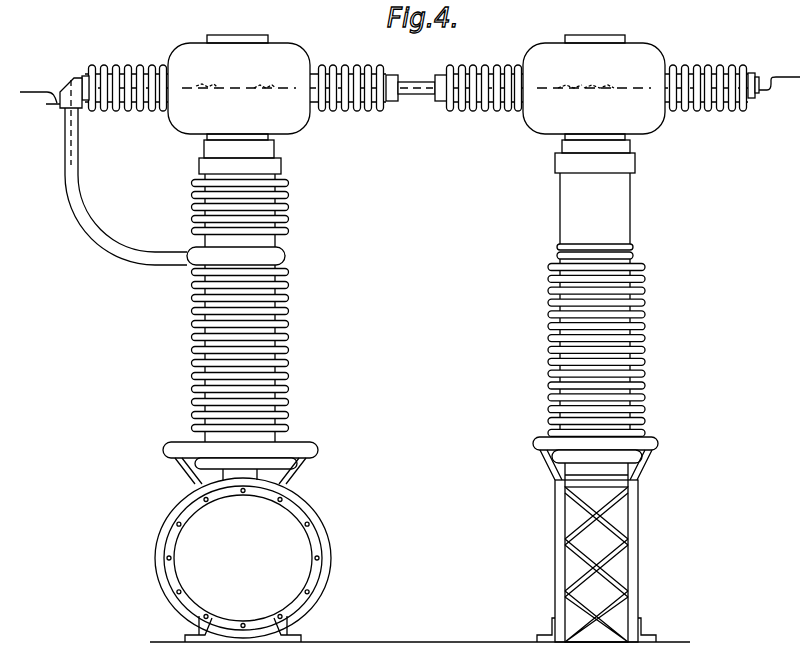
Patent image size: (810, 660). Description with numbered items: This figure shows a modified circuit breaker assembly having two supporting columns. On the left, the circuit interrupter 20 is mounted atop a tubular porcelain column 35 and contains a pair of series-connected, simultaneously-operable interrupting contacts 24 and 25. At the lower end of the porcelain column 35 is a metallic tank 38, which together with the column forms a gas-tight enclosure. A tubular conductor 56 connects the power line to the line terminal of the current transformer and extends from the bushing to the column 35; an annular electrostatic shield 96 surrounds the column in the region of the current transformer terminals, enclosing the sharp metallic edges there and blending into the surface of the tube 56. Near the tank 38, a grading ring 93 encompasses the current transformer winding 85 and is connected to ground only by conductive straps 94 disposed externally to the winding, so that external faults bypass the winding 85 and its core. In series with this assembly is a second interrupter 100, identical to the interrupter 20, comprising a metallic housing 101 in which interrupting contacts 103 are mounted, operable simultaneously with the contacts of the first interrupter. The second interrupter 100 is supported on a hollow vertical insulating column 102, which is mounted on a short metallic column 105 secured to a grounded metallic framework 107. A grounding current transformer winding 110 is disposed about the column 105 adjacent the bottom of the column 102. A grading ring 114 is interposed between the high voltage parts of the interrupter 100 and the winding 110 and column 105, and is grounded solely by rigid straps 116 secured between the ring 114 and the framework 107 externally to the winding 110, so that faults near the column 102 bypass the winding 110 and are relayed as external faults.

The circuit interrupter 20 is at (306, 34).
The interrupting contacts 24 is at (210, 86).
The interrupting contacts 25 is at (265, 86).
The second interrupter 100 is at (676, 34).
The metallic housing 101 is at (655, 112).
The interrupting contacts 103 is at (619, 84).
The tubular conductor 56 is at (100, 230).
The electrostatic shield 96 is at (283, 254).
The porcelain column 35 is at (200, 357).
The insulating column 102 is at (636, 313).
The grading ring 93 is at (305, 444).
The conductive straps 94 is at (182, 474).
The current transformer winding 85 is at (281, 463).
The metallic tank 38 is at (183, 573).
The grading ring 114 is at (648, 440).
The grounding current transformer winding 110 is at (560, 455).
The rigid straps 116 is at (649, 454).
The short metallic column 105 is at (575, 473).
The metallic framework 107 is at (636, 548).